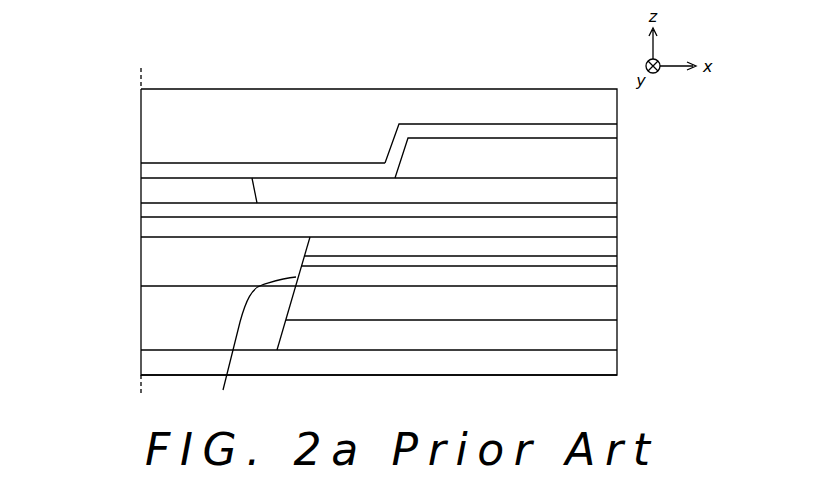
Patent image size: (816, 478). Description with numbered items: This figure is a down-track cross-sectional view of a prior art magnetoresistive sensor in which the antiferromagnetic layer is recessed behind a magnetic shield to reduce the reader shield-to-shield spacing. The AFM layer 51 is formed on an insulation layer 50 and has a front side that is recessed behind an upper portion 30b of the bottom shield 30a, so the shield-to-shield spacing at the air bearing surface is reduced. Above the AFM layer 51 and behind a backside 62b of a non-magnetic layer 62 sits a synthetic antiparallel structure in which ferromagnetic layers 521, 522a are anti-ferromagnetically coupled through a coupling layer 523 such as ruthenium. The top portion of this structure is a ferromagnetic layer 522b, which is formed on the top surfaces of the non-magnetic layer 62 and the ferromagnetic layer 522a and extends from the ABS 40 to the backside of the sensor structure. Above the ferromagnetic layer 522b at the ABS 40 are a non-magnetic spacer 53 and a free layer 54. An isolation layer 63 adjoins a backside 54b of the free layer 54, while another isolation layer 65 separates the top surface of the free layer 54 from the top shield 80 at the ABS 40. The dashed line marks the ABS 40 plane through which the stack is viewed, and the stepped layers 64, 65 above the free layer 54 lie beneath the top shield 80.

The top shield 80 is at (150, 131).
The isolation layer 65 is at (603, 127).
The electrode layer 64 is at (603, 157).
The isolation layer 63 is at (603, 186).
The free layer 54 is at (150, 189).
The backside of the free layer 54b is at (256, 189).
The non-magnetic spacer 53 is at (603, 205).
The ferromagnetic layer 522b is at (150, 227).
The ferromagnetic layer 522a is at (603, 236).
The coupling layer 523 is at (603, 256).
The ferromagnetic layer 521 is at (603, 274).
The non-magnetic layer 62 is at (150, 264).
The backside of non-magnetic layer 62b is at (252, 347).
The AFM layer 51 is at (603, 304).
The insulation layer 50 is at (603, 334).
The upper portion of bottom shield 30b is at (150, 312).
The bottom shield 30a is at (603, 359).
The ABS 40 is at (141, 231).